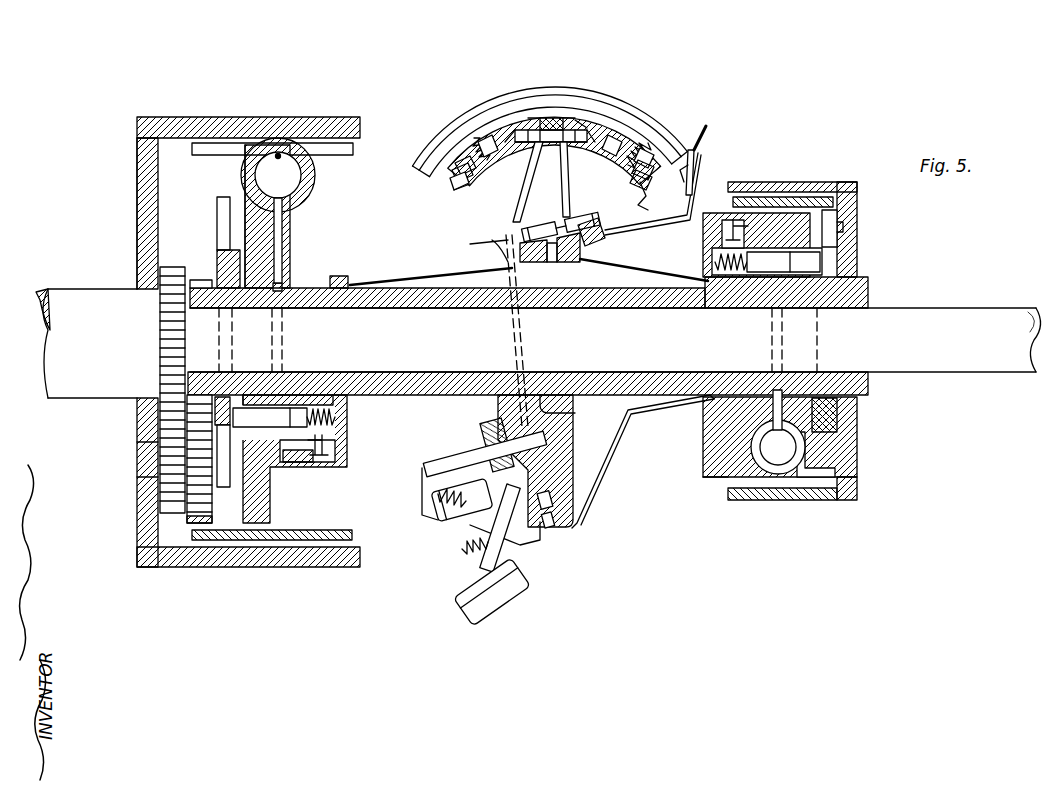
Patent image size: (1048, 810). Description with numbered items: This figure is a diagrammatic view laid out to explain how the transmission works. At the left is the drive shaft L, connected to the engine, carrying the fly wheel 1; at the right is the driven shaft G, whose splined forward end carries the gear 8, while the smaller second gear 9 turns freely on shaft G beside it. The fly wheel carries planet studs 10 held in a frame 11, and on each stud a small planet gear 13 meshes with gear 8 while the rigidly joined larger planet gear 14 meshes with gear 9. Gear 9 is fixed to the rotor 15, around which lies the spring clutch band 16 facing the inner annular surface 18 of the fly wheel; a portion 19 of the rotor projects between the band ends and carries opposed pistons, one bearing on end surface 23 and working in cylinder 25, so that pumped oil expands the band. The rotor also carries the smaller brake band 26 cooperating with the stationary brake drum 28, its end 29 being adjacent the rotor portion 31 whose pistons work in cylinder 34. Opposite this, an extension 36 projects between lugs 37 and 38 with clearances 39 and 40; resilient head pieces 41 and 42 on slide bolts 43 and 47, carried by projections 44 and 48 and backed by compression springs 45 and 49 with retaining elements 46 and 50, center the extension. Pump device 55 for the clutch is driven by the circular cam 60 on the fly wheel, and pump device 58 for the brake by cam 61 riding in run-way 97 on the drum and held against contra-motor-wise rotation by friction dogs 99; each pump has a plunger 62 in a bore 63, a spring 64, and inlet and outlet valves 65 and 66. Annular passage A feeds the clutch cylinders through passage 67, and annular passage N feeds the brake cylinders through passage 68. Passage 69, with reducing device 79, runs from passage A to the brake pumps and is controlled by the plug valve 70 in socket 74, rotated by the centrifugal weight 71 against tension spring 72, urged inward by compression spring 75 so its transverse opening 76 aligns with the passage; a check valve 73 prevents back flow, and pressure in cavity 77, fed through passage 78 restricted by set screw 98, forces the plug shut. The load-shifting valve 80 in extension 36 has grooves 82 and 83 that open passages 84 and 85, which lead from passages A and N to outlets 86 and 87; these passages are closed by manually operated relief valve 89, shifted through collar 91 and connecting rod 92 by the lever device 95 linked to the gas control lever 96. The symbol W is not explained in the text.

The fly wheel 1 is at (205, 558).
The gear 8 is at (165, 313).
The second gear 9 is at (200, 280).
The planet studs 10 is at (157, 460).
The frame 11 is at (225, 487).
The relatively small planet gear 13 is at (175, 493).
The relatively larger planet gear 14 is at (190, 520).
The rotor 15 is at (330, 276).
The clutch band 16 is at (346, 155).
The inner annular clutch surface 18 is at (137, 178).
The rotor portion 19 is at (252, 143).
The end surface of clutch band 23 is at (330, 138).
The cylinder 25 is at (284, 152).
The brake band 26 is at (430, 172).
The stationary brake drum 28 is at (425, 148).
The end of brake band 29 is at (805, 462).
The rotor portion 31 is at (758, 462).
The cylinder 34 is at (778, 465).
The extension 36 is at (548, 130).
The lug 37 is at (480, 142).
The lug 38 is at (615, 140).
The clearance 39 is at (510, 135).
The clearance 40 is at (580, 142).
The resilient head piece 41 is at (485, 140).
The resilient head piece 42 is at (650, 152).
The slide bolt 43 is at (462, 160).
The projection 44 is at (452, 183).
The compression spring 45 is at (458, 172).
The retaining element 46 is at (458, 190).
The slide bolt 47 is at (648, 150).
The projection 48 is at (650, 180).
The compression spring 49 is at (648, 170).
The retaining element 50 is at (646, 205).
The pump device 55 is at (265, 425).
The pump device 58 is at (828, 255).
The circular cam 60 is at (217, 250).
The circular cam 61 is at (840, 420).
The plunger 62 is at (348, 406).
The bore 63 is at (312, 372).
The spring 64 is at (348, 425).
The inlet valve 65 is at (348, 450).
The outlet valve 66 is at (318, 458).
The passage 67 is at (284, 233).
The passage 68 is at (705, 440).
The passage 69 is at (492, 242).
The valve 70 is at (460, 515).
The weight 71 is at (472, 602).
The tension spring 72 is at (466, 548).
The check valve 73 is at (515, 545).
The cylindrical socket 74 is at (482, 436).
The compression spring 75 is at (436, 496).
The transverse opening 76 is at (540, 452).
The cavity 77 is at (548, 448).
The passage 78 is at (552, 500).
The reducing device 79 is at (500, 430).
The load-shifting valve 80 is at (556, 118).
The annular groove 82 is at (536, 120).
The annular groove 83 is at (590, 136).
The passage 84 is at (520, 200).
The passage 85 is at (568, 206).
The opening 86 is at (565, 118).
The opening 87 is at (582, 124).
The manually operated relief valve 89 is at (547, 222).
The collar 91 is at (606, 238).
The connecting rod 92 is at (672, 222).
The lever device 95 is at (700, 180).
The gas control lever 96 is at (706, 150).
The circular run-way 97 is at (840, 266).
The set screw 98 is at (556, 525).
The friction dogs 99 is at (840, 230).
The annular passage A is at (285, 285).
The member W is at (570, 262).
The annular passage N is at (706, 407).
The driven shaft G is at (975, 365).
The drive shaft L is at (75, 364).